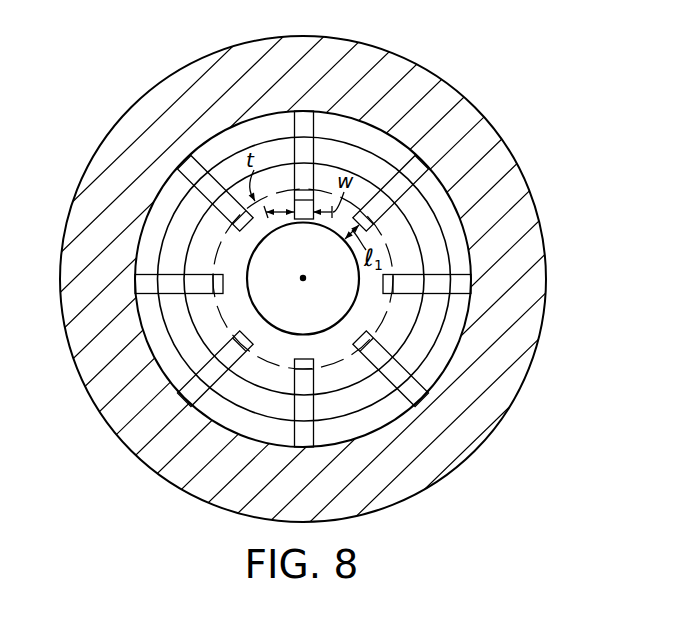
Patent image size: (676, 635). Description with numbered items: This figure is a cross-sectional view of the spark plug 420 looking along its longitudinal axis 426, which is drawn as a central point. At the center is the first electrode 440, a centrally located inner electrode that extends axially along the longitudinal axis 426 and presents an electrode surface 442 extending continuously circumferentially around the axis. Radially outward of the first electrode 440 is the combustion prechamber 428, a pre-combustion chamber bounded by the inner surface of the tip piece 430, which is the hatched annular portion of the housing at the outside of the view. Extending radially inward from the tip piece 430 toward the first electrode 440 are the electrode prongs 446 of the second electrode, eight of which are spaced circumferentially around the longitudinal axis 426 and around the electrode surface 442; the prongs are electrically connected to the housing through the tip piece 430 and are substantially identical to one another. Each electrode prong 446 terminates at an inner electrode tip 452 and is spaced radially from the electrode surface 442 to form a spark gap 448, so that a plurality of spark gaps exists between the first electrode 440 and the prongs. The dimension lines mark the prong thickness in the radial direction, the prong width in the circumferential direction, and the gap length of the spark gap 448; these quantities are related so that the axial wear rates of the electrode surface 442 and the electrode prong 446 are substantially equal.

The spark plug 420 is at (73, 143).
The tip piece 430 is at (478, 128).
The electrode prong 446 is at (302, 111).
The electrode tip 452 is at (238, 228).
The spark gap 448 is at (258, 236).
The electrode surface 442 is at (262, 315).
The longitudinal axis 426 is at (299, 286).
The first electrode 440 is at (338, 323).
The combustion prechamber 428 is at (362, 409).